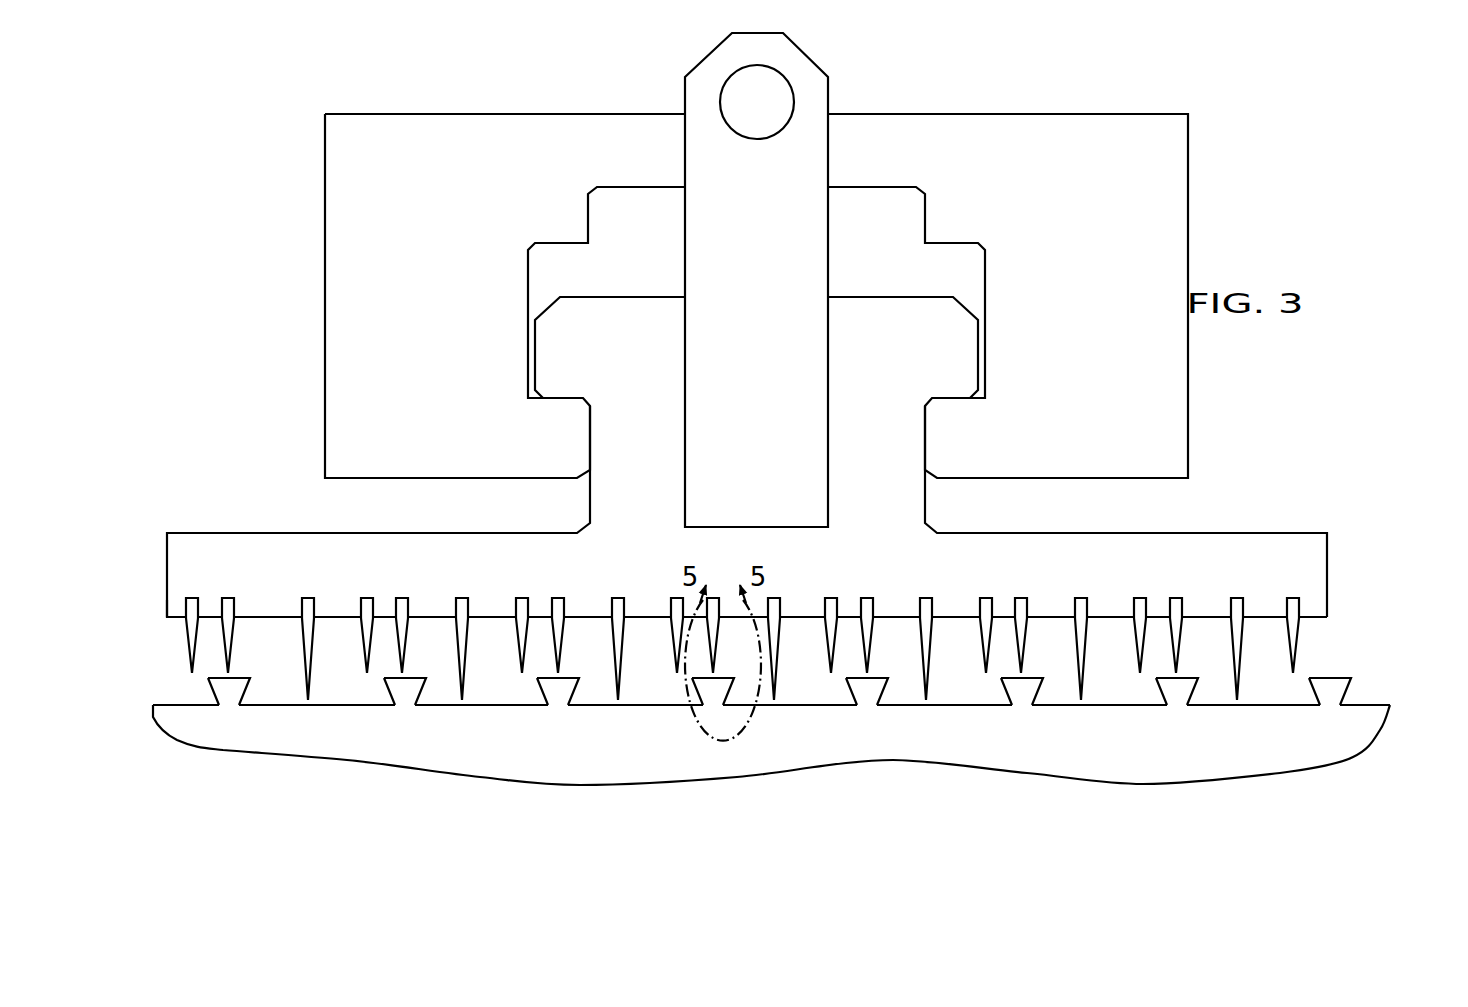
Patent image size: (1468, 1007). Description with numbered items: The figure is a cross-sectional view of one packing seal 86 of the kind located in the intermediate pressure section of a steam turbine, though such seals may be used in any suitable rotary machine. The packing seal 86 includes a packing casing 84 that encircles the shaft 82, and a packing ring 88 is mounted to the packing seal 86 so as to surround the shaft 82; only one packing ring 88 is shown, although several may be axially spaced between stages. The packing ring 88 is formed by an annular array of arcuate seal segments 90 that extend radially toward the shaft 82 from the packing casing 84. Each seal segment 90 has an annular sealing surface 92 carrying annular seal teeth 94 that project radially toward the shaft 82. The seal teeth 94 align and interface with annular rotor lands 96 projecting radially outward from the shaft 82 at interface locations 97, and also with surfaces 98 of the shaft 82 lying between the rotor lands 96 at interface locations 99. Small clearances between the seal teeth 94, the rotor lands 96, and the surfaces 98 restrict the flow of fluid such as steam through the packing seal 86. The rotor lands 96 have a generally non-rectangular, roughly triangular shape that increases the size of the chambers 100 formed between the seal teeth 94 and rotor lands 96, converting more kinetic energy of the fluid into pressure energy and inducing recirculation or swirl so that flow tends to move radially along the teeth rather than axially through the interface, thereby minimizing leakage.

The shaft 82 is at (1380, 730).
The packing casing 84 is at (342, 215).
The packing seal 86 is at (207, 433).
The packing ring 88 is at (163, 578).
The seal segment 90 is at (862, 511).
The annular sealing surface 92 is at (177, 623).
The seal teeth 94 is at (367, 657).
The rotor lands 96 is at (208, 690).
The interface locations 97 is at (410, 673).
The surfaces 98 is at (635, 705).
The interface locations 99 is at (937, 700).
The chambers 100 is at (360, 688).